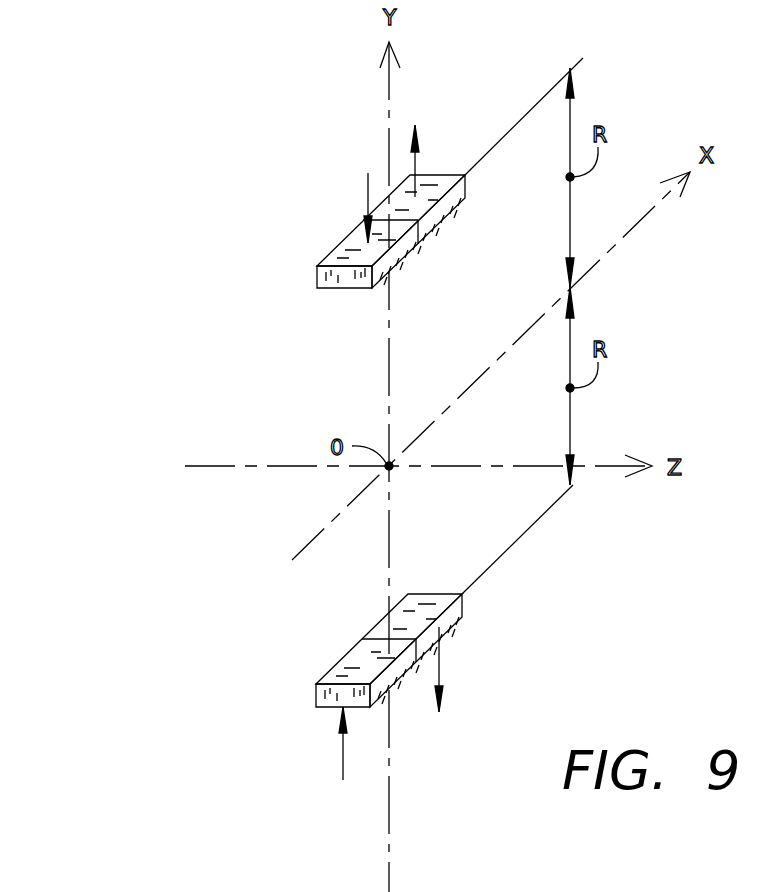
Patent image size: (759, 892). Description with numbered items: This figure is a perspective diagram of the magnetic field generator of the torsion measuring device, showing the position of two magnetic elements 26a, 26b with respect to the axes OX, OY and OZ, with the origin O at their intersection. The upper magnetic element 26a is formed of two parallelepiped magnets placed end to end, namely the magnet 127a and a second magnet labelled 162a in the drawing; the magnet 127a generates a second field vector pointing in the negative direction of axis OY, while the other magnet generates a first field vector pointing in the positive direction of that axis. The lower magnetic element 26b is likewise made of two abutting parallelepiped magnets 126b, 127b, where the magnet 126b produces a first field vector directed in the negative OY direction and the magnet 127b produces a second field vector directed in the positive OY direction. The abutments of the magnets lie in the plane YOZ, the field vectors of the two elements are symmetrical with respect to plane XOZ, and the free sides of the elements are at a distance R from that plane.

The magnetic element 26a is at (436, 250).
The parallelepiped magnet 127a is at (335, 289).
The second region of upper strip 162a is at (440, 220).
The magnetic element 26b is at (403, 560).
The parallelepiped magnet 127b is at (347, 657).
The parallelepiped magnet 126b is at (452, 623).